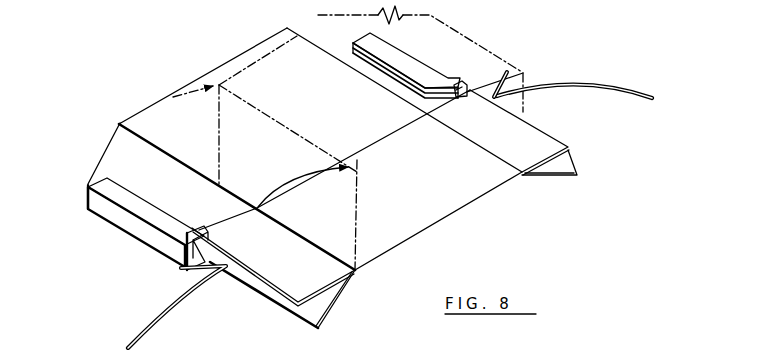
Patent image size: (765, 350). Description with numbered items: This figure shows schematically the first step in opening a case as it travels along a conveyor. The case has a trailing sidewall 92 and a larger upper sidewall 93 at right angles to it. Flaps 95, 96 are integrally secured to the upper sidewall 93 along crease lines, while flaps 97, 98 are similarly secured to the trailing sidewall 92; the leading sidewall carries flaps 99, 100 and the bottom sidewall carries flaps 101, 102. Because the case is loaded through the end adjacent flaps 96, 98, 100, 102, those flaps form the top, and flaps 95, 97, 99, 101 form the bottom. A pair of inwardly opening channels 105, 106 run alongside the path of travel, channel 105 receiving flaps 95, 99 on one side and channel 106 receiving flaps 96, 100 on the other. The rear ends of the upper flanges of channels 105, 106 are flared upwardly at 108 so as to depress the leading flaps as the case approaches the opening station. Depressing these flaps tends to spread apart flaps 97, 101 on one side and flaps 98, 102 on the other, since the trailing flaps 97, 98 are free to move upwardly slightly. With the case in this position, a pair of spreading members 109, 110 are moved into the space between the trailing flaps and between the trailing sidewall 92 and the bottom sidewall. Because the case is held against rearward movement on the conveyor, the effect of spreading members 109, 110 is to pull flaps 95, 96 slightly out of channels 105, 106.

The trailing sidewall 92 is at (332, 226).
The upper sidewall 93 is at (203, 134).
The flap 95 is at (182, 194).
The flap 96 is at (345, 52).
The flap 97 is at (268, 255).
The flap 98 is at (504, 141).
The flap 99 is at (87, 186).
The flap 100 is at (402, 39).
The flap 101 is at (318, 309).
The flap 102 is at (566, 179).
The inwardly opening channel 105 is at (126, 238).
The inwardly opening channel 106 is at (436, 54).
The flared upper flange end 108 is at (192, 228).
The spreading member 109 is at (176, 312).
The spreading member 110 is at (558, 99).